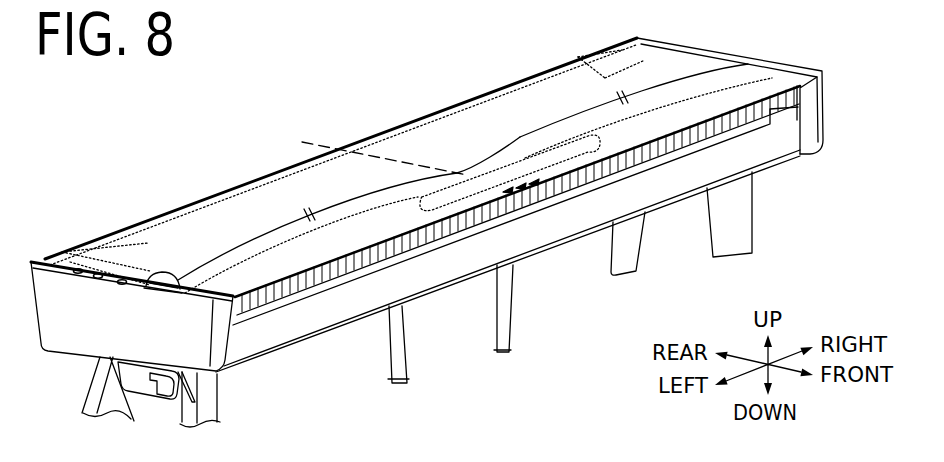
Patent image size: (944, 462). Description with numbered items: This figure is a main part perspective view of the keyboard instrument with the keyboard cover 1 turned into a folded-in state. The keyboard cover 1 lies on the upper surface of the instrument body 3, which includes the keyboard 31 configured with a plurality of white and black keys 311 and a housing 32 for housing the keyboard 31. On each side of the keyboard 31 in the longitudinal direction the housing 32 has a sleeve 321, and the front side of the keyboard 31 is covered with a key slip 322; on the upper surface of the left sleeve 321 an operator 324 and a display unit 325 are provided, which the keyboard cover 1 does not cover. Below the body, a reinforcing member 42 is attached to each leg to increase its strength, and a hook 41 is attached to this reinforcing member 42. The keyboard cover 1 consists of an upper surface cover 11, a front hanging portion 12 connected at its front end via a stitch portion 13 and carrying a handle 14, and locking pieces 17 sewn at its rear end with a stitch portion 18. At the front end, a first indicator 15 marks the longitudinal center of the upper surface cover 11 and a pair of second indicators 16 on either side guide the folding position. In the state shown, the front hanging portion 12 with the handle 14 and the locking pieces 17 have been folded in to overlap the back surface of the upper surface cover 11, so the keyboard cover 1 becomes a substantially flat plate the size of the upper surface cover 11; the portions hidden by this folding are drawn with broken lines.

The keyboard cover 1 is at (386, 120).
The instrument body 3 is at (823, 68).
The upper surface cover 11 is at (217, 213).
The front hanging portion 12 is at (333, 242).
The stitch portion 13 is at (787, 90).
The handle 14 is at (585, 167).
The first indicator 15 is at (522, 186).
The second indicators 16 is at (535, 182).
The locking pieces 17 is at (97, 245).
The stitch portion 18 is at (82, 243).
The keyboard 31 is at (763, 130).
The keys 311 is at (717, 131).
The housing 32 is at (673, 43).
The sleeve 321 is at (200, 342).
The key slip 322 is at (422, 282).
The operator 324 is at (157, 272).
The display unit 325 is at (63, 357).
The hook 41 is at (167, 382).
The reinforcing member 42 is at (188, 398).